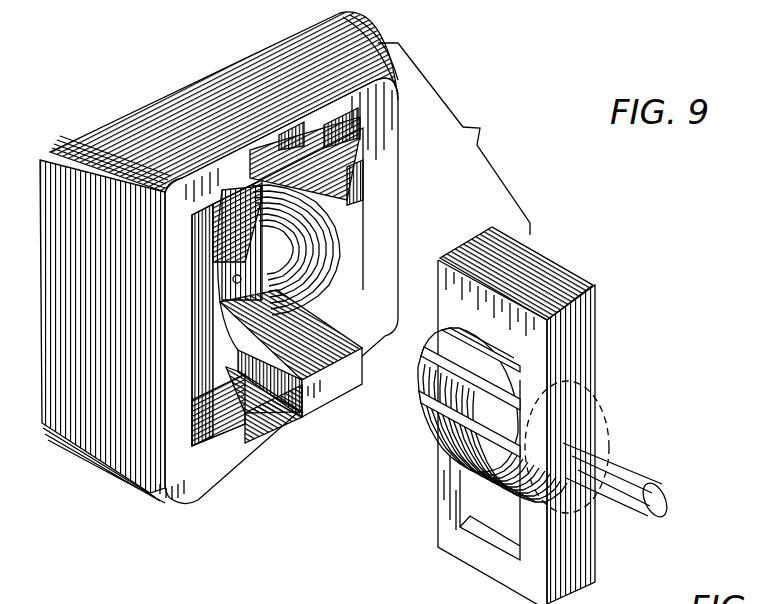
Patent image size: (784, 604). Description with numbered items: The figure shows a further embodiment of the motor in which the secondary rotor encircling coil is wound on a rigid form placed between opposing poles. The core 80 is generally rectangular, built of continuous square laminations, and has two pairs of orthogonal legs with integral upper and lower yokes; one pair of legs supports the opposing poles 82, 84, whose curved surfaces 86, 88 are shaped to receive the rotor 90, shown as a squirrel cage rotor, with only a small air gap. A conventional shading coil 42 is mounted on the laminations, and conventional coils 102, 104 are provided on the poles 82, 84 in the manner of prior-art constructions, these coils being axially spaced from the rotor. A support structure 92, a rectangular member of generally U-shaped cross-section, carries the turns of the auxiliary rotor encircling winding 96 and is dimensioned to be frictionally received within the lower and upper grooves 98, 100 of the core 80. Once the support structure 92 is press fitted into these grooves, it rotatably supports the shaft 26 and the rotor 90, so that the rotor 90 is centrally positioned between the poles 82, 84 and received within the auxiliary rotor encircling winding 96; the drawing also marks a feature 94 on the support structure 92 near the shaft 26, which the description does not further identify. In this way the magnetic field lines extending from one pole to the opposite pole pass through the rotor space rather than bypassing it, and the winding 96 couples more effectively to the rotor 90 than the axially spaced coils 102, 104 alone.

The core 80 is at (219, 256).
The upper groove 100 is at (263, 150).
The shading coil 42 is at (365, 172).
The coil 104 is at (363, 210).
The curved surface 86 is at (330, 250).
The support structure 92 is at (445, 278).
The auxiliary rotor encircling winding 96 is at (516, 415).
The bearing opening 94 is at (568, 442).
The shaft 26 is at (623, 480).
The rotor 90 is at (440, 450).
The pole 82 is at (313, 320).
The lower groove 98 is at (282, 425).
The pole 84 is at (222, 400).
The coil 102 is at (192, 386).
The curved surface 88 is at (233, 275).